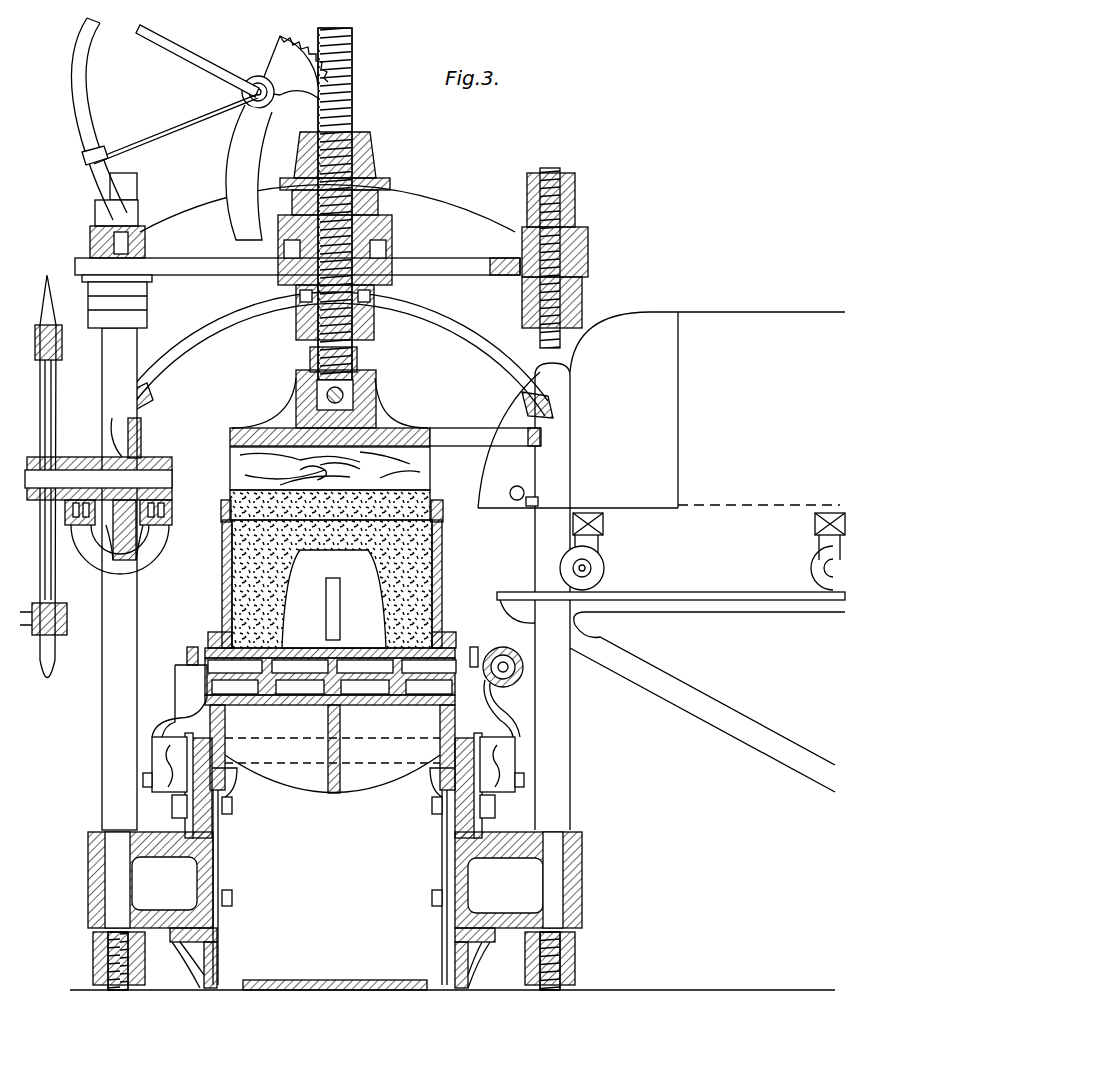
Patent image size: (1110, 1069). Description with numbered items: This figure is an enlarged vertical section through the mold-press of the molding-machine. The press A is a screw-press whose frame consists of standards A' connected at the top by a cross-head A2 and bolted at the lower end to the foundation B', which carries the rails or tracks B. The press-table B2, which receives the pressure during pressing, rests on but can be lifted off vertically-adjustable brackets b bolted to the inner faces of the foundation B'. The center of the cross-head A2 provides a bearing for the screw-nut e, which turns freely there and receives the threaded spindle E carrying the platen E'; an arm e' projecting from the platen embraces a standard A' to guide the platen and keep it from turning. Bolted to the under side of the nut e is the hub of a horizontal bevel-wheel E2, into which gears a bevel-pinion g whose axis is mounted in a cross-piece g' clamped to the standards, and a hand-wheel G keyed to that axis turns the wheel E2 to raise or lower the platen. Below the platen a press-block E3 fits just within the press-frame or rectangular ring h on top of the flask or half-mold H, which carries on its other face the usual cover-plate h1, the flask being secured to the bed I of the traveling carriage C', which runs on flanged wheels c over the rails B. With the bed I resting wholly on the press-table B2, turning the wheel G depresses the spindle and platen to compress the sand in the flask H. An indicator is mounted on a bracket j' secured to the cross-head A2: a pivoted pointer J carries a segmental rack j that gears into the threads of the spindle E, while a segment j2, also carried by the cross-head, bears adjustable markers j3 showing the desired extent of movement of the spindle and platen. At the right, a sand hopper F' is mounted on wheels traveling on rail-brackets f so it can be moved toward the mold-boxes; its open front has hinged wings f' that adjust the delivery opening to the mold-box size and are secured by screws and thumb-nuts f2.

The press A is at (333, 879).
The standards A' is at (336, 579).
The cross-head A2 is at (297, 230).
The rails or tracks B is at (335, 873).
The foundation B' is at (334, 935).
The press-table B2 is at (332, 749).
The vertically-adjustable brackets b is at (332, 851).
The traveling carriage C' is at (337, 692).
The grooved or flanged wheels c is at (333, 785).
The threaded spindle E is at (339, 204).
The platen E' is at (385, 394).
The horizontal bevel-wheel E2 is at (332, 355).
The press-block E3 is at (342, 468).
The screw-nut e is at (342, 236).
The arm e' is at (547, 436).
The sand hopper F' is at (761, 410).
The hinged wings f' is at (609, 410).
The screws and thumb-nuts f2 is at (509, 440).
The rail-brackets f is at (671, 652).
The hand-wheel G is at (49, 476).
The bevel-pinion g is at (129, 489).
The cross-piece g' is at (108, 515).
The flask or half-mold H is at (329, 584).
The press-frame or rectangular ring h is at (332, 506).
The plate h1 is at (330, 642).
The bed-plate I is at (330, 681).
The pivoted pointer J is at (175, 129).
The segmental rack j is at (285, 72).
The bracket j' is at (248, 172).
The segment j2 is at (165, 119).
The adjustable markers j3 is at (81, 165).